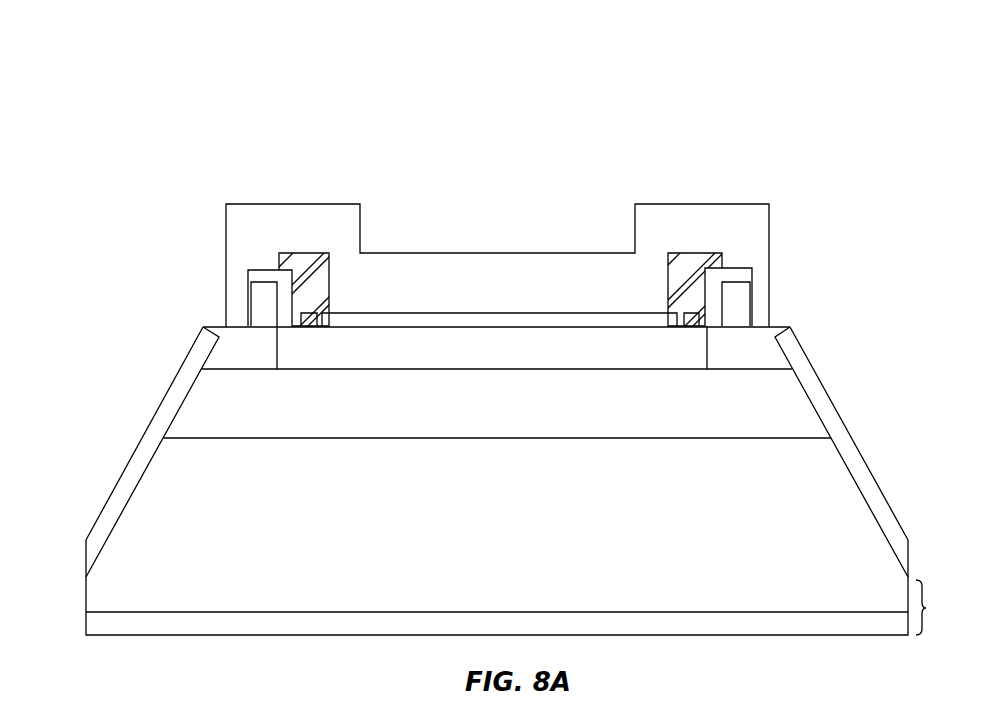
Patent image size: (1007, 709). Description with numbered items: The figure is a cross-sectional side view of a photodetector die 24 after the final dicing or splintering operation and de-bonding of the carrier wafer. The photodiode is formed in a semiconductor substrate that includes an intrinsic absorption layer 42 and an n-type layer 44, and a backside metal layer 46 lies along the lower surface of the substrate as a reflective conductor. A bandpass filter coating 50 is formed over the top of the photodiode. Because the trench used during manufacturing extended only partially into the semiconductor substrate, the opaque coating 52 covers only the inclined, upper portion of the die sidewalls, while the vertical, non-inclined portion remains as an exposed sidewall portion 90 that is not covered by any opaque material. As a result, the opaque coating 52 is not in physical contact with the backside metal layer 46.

The photodetector die 24 is at (820, 82).
The bandpass filter coating 50 is at (292, 215).
The intrinsic absorption layer 42 is at (738, 383).
The opaque coating 52 is at (163, 420).
The n-type layer 44 is at (93, 595).
The backside metal layer 46 is at (133, 625).
The exposed sidewall portion 90 is at (932, 607).